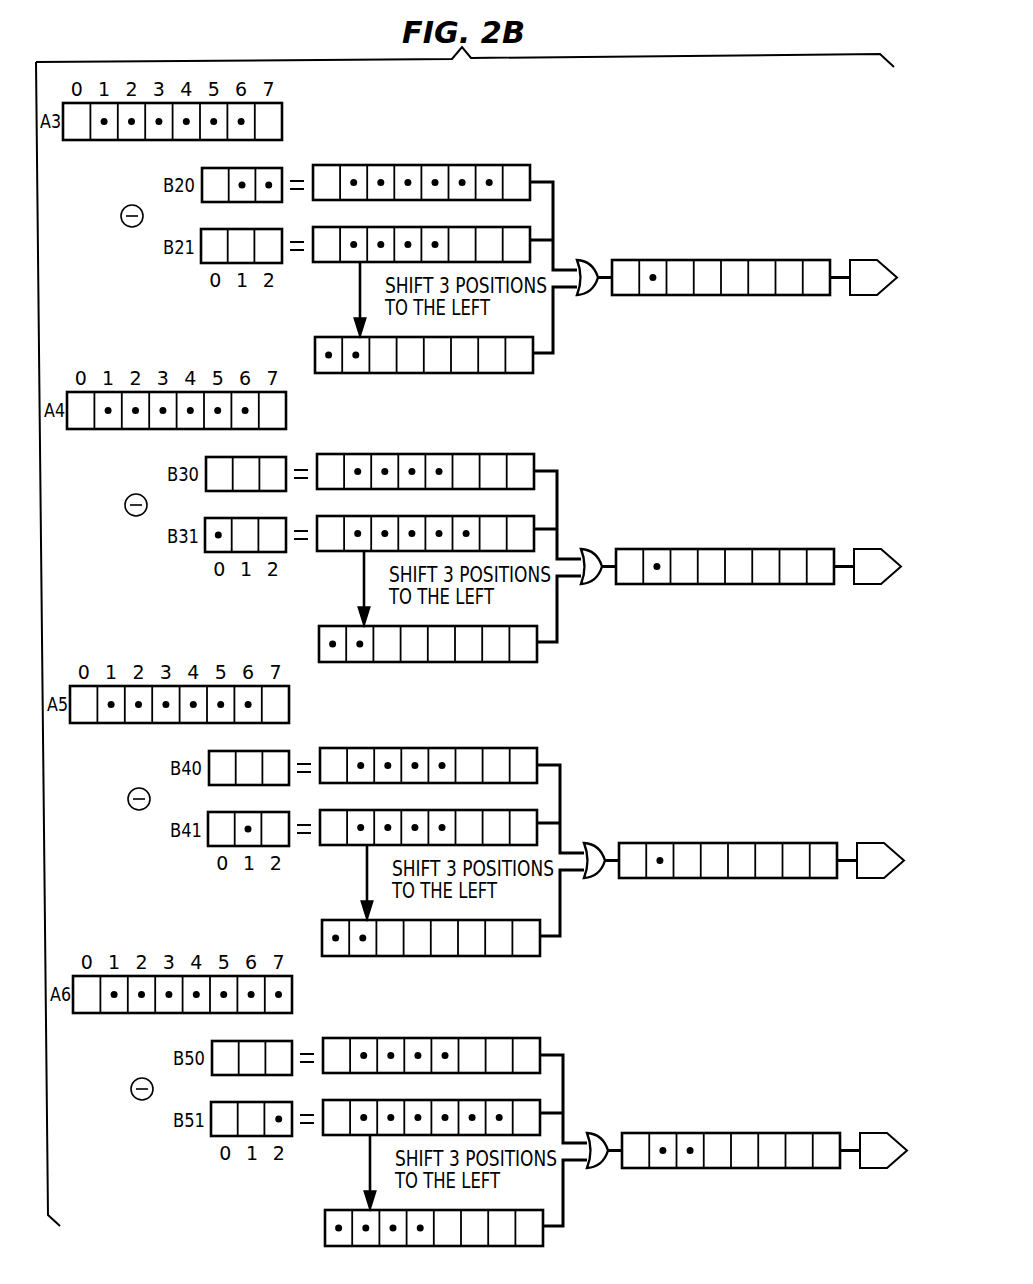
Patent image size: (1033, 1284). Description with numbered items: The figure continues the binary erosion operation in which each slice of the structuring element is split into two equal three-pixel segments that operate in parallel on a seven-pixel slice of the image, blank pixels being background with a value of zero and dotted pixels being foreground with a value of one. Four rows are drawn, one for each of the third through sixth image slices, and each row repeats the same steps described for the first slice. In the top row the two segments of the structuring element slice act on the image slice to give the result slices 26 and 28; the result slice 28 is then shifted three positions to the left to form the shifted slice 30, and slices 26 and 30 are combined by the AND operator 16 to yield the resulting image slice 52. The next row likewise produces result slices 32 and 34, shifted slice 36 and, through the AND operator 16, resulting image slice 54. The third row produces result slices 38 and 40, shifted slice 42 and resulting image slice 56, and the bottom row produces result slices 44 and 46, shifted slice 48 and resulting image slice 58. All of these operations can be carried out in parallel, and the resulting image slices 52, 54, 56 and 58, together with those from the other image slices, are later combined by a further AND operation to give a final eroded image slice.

The AND operator 16 is at (590, 294).
The first shifted B20 register 26 is at (530, 172).
The second B21 register 28 is at (530, 237).
The register shifted 3 positions to the left 30 is at (533, 363).
The first shifted B30 register 32 is at (452, 458).
The second B31 register 34 is at (460, 525).
The register shifted 3 positions to the left 36 is at (453, 657).
The first shifted B40 register 38 is at (455, 752).
The second B41 register 40 is at (463, 819).
The register shifted 3 positions to the left 42 is at (456, 951).
The first shifted B50 register 44 is at (458, 1042).
The second B51 register 46 is at (466, 1109).
The register shifted 3 positions to the left 48 is at (459, 1241).
The resulting image slice 52 is at (750, 295).
The resulting image slice 54 is at (758, 579).
The resulting image slice 56 is at (761, 873).
The resulting image slice 58 is at (764, 1163).